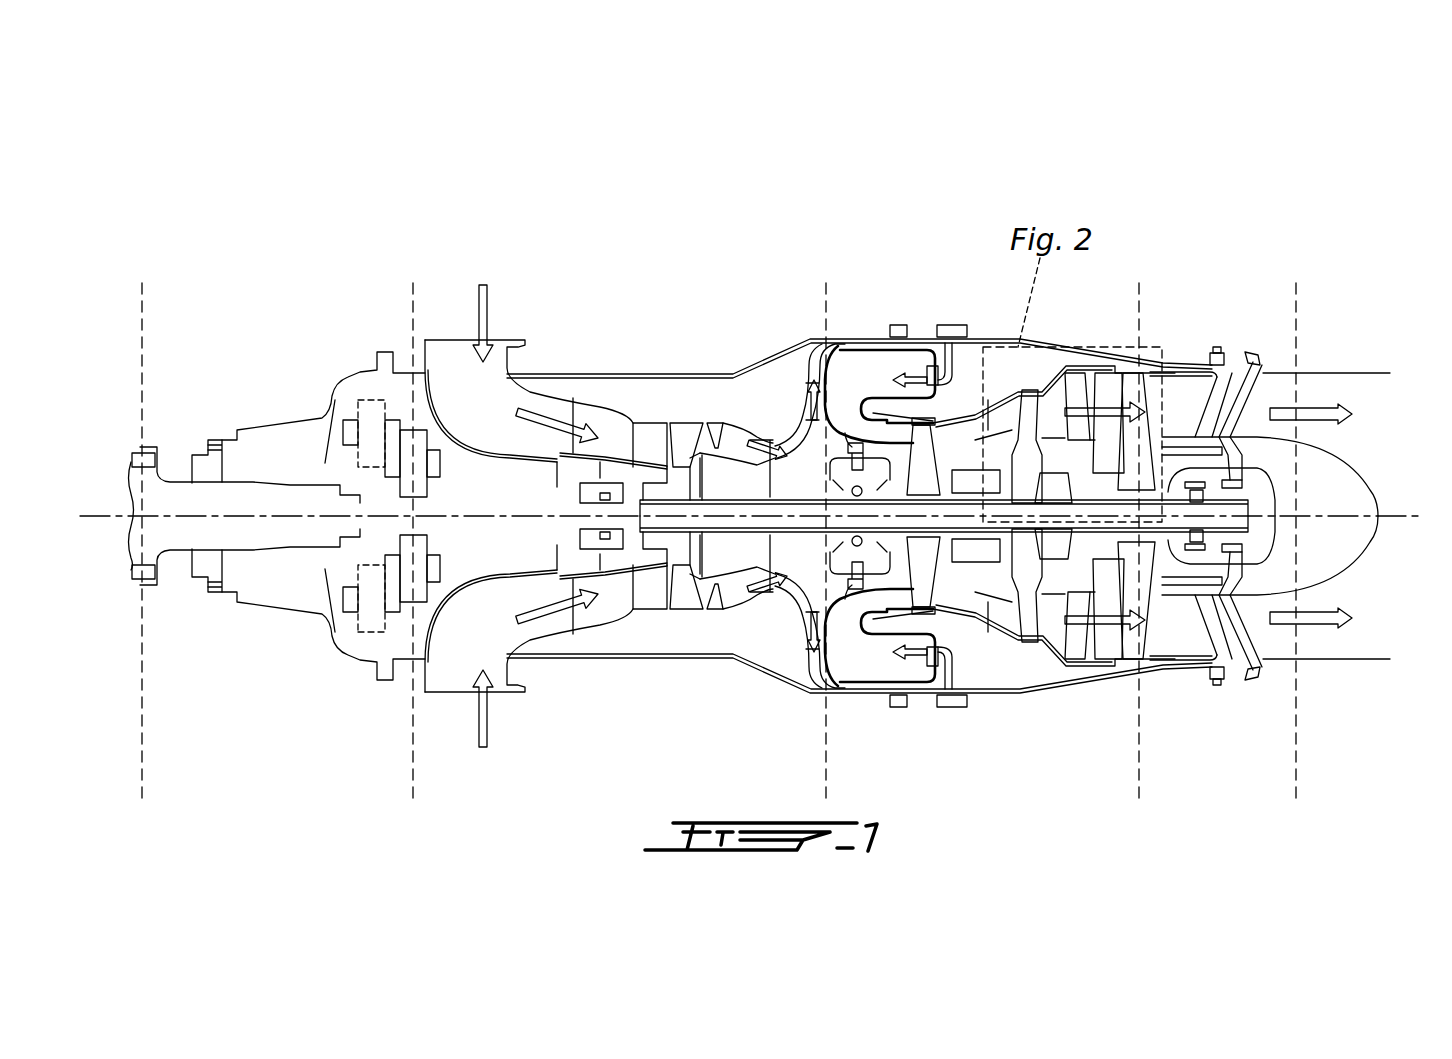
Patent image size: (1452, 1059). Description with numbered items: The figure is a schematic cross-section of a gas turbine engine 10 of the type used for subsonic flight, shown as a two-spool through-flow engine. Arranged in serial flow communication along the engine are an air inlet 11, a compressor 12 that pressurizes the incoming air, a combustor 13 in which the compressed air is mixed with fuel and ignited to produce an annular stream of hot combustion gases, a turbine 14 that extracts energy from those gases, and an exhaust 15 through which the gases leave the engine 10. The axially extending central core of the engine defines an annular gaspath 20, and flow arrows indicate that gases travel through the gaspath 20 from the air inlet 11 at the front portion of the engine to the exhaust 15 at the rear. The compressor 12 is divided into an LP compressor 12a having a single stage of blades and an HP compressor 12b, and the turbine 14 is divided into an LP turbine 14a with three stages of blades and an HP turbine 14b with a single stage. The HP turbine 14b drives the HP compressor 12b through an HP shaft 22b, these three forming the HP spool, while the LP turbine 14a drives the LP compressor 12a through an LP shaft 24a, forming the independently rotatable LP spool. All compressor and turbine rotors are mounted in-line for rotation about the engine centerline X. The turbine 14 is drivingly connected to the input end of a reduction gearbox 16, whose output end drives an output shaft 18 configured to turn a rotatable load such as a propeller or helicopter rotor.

The gas turbine engine 10 is at (650, 200).
The air inlet 11 is at (443, 346).
The compressor 12 is at (702, 529).
The LP compressor 12a is at (692, 440).
The HP compressor 12b is at (790, 437).
The combustor 13 is at (866, 358).
The turbine 14 is at (1016, 493).
The LP turbine 14a is at (1070, 348).
The HP turbine 14b is at (887, 601).
The exhaust 15 is at (1369, 391).
The reduction gearbox 16 is at (351, 645).
The output shaft 18 is at (172, 502).
The annular gaspath 20 is at (655, 435).
The HP shaft 22b is at (898, 493).
The LP shaft 24a is at (782, 582).
The engine centerline X is at (1408, 516).